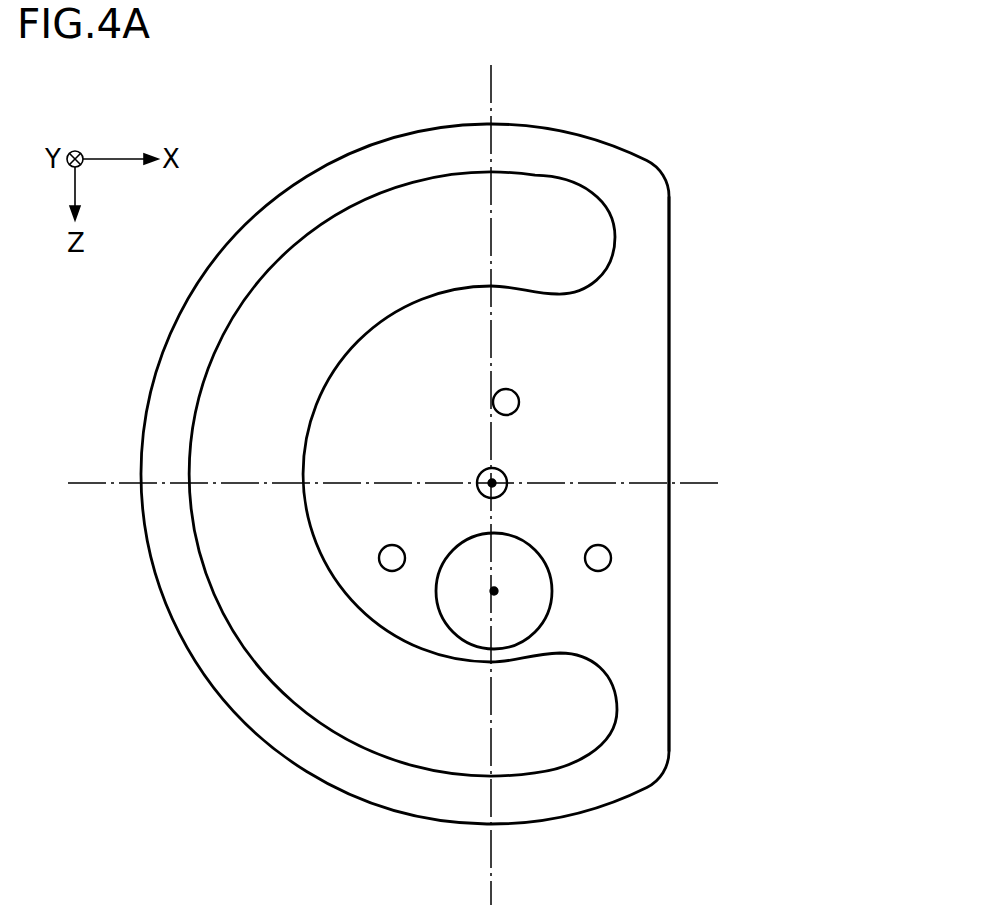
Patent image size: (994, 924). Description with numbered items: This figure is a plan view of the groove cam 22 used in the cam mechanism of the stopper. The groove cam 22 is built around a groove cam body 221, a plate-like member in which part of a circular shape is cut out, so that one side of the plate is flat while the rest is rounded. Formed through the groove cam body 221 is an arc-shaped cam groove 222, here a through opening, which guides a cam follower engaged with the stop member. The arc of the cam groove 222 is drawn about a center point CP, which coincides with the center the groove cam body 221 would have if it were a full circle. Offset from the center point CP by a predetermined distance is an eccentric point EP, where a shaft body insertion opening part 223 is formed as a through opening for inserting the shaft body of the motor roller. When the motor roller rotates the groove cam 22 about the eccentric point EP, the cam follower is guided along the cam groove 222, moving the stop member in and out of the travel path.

The groove cam 22 is at (650, 119).
The groove cam body 221 is at (656, 380).
The cam groove 222 is at (310, 293).
The shaft body insertion opening part 223 is at (535, 595).
The center point CP is at (503, 472).
The eccentric point EP is at (494, 591).